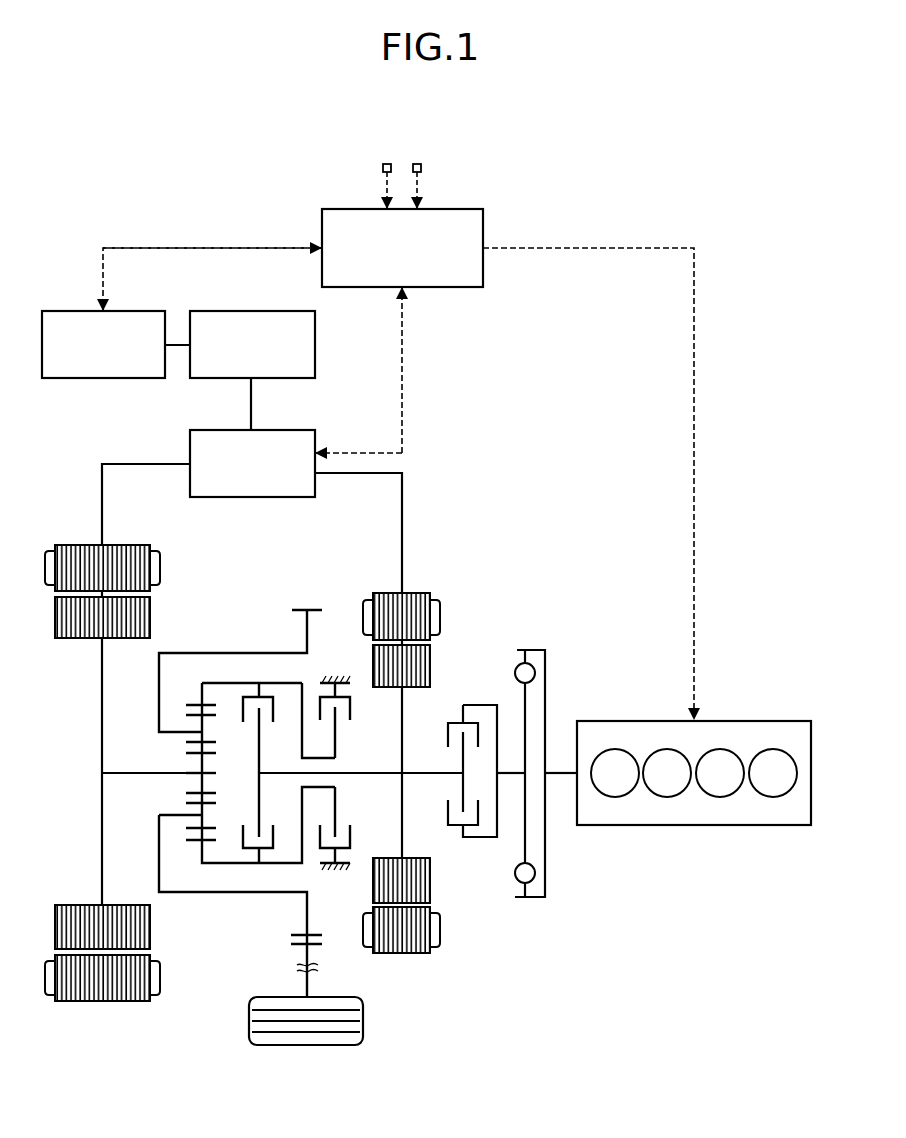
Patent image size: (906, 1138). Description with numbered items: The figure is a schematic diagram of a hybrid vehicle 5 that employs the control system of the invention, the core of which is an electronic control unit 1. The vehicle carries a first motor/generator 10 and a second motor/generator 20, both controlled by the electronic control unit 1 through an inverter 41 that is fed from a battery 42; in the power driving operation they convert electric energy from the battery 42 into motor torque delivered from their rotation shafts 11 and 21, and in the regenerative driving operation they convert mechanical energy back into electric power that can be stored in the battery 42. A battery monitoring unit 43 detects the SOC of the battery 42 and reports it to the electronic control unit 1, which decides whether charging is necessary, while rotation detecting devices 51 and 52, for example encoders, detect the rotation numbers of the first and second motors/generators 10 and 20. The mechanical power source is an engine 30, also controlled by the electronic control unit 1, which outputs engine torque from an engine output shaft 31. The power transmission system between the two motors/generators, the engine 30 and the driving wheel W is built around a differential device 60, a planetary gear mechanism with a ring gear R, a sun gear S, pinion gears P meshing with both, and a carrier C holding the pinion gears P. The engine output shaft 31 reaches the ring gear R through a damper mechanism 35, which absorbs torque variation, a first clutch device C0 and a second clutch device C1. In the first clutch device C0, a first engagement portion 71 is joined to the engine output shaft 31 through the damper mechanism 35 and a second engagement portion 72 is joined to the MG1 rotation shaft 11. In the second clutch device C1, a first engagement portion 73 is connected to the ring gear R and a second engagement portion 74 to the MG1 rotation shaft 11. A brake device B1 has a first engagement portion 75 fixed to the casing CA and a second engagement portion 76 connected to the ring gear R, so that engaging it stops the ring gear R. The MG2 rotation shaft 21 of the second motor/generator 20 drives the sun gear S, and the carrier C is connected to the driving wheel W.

The electronic control unit 1 is at (483, 234).
The hybrid vehicle 5 is at (640, 220).
The first motor/generator 10 is at (448, 603).
The MG1 rotation shaft 11 is at (415, 771).
The second motor/generator 20 is at (168, 556).
The MG2 rotation shaft 21 is at (117, 772).
The engine 30 is at (749, 720).
The engine output shaft 31 is at (560, 774).
The damper mechanism 35 is at (546, 697).
The inverter 41 is at (279, 430).
The battery 42 is at (279, 311).
The battery monitoring unit 43 is at (130, 311).
The rotation detecting device 51 is at (396, 168).
The rotation detecting device 52 is at (425, 168).
The differential device 60 is at (259, 788).
The first engagement portion 71 is at (447, 804).
The second engagement portion 72 is at (462, 786).
The first engagement portion 73 is at (277, 836).
The second engagement portion 74 is at (256, 748).
The first engagement portion 75 is at (349, 836).
The second engagement portion 76 is at (337, 735).
The carrier C is at (159, 685).
The ring gear R is at (202, 691).
The pinion gears P is at (202, 730).
The sun gear S is at (202, 773).
The second clutch device C1 is at (263, 773).
The first clutch device C0 is at (461, 764).
The brake device B1 is at (357, 761).
The casing CA is at (336, 663).
The driving wheel W is at (283, 997).